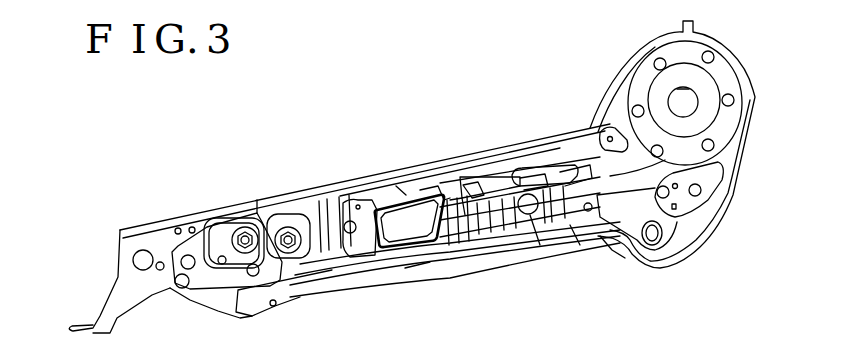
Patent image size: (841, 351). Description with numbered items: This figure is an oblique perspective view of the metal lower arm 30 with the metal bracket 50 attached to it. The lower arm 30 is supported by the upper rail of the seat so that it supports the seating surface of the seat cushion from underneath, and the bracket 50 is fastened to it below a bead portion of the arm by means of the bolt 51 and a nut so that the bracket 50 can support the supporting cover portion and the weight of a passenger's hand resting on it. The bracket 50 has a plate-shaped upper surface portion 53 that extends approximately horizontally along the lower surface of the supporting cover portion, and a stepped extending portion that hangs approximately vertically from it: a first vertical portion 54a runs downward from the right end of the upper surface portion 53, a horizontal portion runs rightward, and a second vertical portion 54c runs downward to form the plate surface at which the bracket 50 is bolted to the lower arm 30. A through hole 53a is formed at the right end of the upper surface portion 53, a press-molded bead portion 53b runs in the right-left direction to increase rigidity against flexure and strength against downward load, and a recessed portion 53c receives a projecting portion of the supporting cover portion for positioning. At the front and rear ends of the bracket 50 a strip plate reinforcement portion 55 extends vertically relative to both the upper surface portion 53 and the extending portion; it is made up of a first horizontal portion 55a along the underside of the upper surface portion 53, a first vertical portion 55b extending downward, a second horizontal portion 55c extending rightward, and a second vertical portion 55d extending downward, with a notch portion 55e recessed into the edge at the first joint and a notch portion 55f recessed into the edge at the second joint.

The lower arm 30 is at (340, 183).
The bracket 50 is at (511, 250).
The bolt 51 is at (470, 256).
The upper surface portion 53 is at (500, 172).
The through hole 53a is at (490, 185).
The bead portion 53b is at (530, 178).
The recessed portion 53c is at (575, 185).
The first vertical portion 54a is at (498, 252).
The second vertical portion 54c is at (438, 266).
The strip plate reinforcement portion 55 is at (461, 262).
The first horizontal portion 55a is at (472, 195).
The first vertical portion 55b is at (438, 197).
The second horizontal portion 55c is at (415, 195).
The second vertical portion 55d is at (414, 275).
The notch portion 55e is at (460, 196).
The notch portion 55f is at (405, 192).